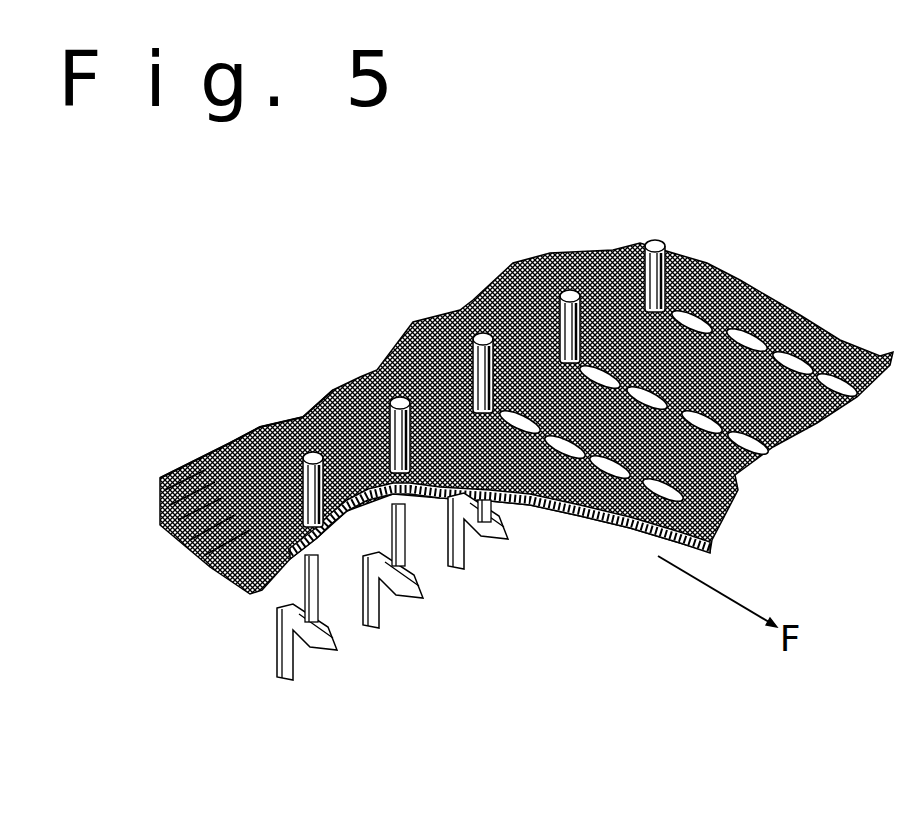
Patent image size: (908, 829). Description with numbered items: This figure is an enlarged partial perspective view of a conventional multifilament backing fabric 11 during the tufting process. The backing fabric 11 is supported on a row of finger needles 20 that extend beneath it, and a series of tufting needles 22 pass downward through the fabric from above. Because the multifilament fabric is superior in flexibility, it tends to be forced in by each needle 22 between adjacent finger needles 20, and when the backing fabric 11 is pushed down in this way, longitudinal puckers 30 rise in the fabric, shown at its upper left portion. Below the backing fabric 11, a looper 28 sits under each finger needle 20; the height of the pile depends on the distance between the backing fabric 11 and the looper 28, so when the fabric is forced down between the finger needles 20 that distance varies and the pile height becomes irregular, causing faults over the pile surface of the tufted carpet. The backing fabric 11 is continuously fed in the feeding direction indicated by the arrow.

The backing fabric 11 is at (526, 423).
The finger needle 20 is at (367, 535).
The needle 22 is at (660, 229).
The looper 28 is at (485, 576).
The longitudinal pucker 30 is at (225, 442).